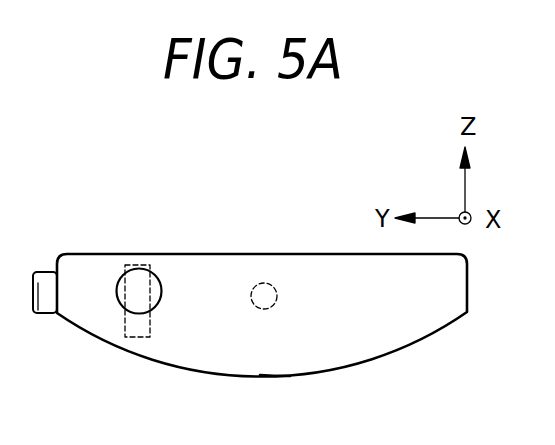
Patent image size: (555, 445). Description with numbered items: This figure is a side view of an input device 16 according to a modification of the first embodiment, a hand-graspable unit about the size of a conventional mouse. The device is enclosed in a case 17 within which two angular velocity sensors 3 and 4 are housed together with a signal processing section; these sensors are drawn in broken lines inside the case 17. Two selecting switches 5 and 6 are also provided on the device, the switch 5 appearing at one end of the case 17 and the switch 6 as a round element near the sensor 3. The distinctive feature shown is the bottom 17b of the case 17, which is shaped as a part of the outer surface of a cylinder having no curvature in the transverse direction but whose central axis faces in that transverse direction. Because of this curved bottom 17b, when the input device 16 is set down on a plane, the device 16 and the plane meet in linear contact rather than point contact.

The angular velocity sensor 3 is at (150, 325).
The angular velocity sensor 4 is at (277, 297).
The selecting switch 5 is at (47, 302).
The selecting switch 6 is at (138, 303).
The input device 16 is at (241, 225).
The case 17 is at (398, 332).
The bottom 17b is at (270, 378).